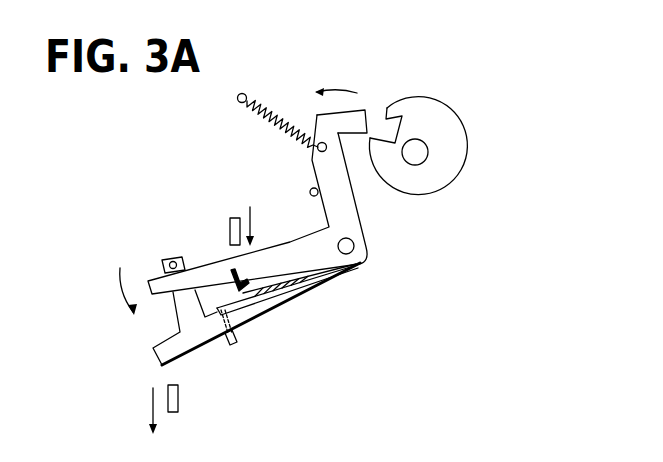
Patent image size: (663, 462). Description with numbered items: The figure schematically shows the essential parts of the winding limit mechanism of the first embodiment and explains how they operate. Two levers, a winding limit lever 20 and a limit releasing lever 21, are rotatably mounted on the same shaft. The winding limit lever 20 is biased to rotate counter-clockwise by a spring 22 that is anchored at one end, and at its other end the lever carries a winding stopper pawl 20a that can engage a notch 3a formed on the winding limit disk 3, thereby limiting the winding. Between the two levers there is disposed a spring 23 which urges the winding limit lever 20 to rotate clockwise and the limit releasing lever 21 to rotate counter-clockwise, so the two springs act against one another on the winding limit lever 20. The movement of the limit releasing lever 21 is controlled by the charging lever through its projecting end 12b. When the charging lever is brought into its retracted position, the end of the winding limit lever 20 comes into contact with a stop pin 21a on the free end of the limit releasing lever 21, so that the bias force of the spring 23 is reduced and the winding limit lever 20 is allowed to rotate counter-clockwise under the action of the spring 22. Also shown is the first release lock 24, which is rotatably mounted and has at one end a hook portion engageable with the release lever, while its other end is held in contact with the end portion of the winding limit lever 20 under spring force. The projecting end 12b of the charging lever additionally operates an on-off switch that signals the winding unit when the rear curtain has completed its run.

The winding limit disk 3 is at (443, 132).
The notch 3a is at (390, 118).
The winding limit lever 20 is at (288, 253).
The winding stopper pawl 20a is at (358, 122).
The limit releasing lever 21 is at (243, 312).
The stop pin 21a is at (173, 261).
The spring 22 is at (271, 110).
The spring 23 is at (292, 282).
The first release lock 24 is at (233, 218).
The projecting end of charging lever 12b is at (179, 400).